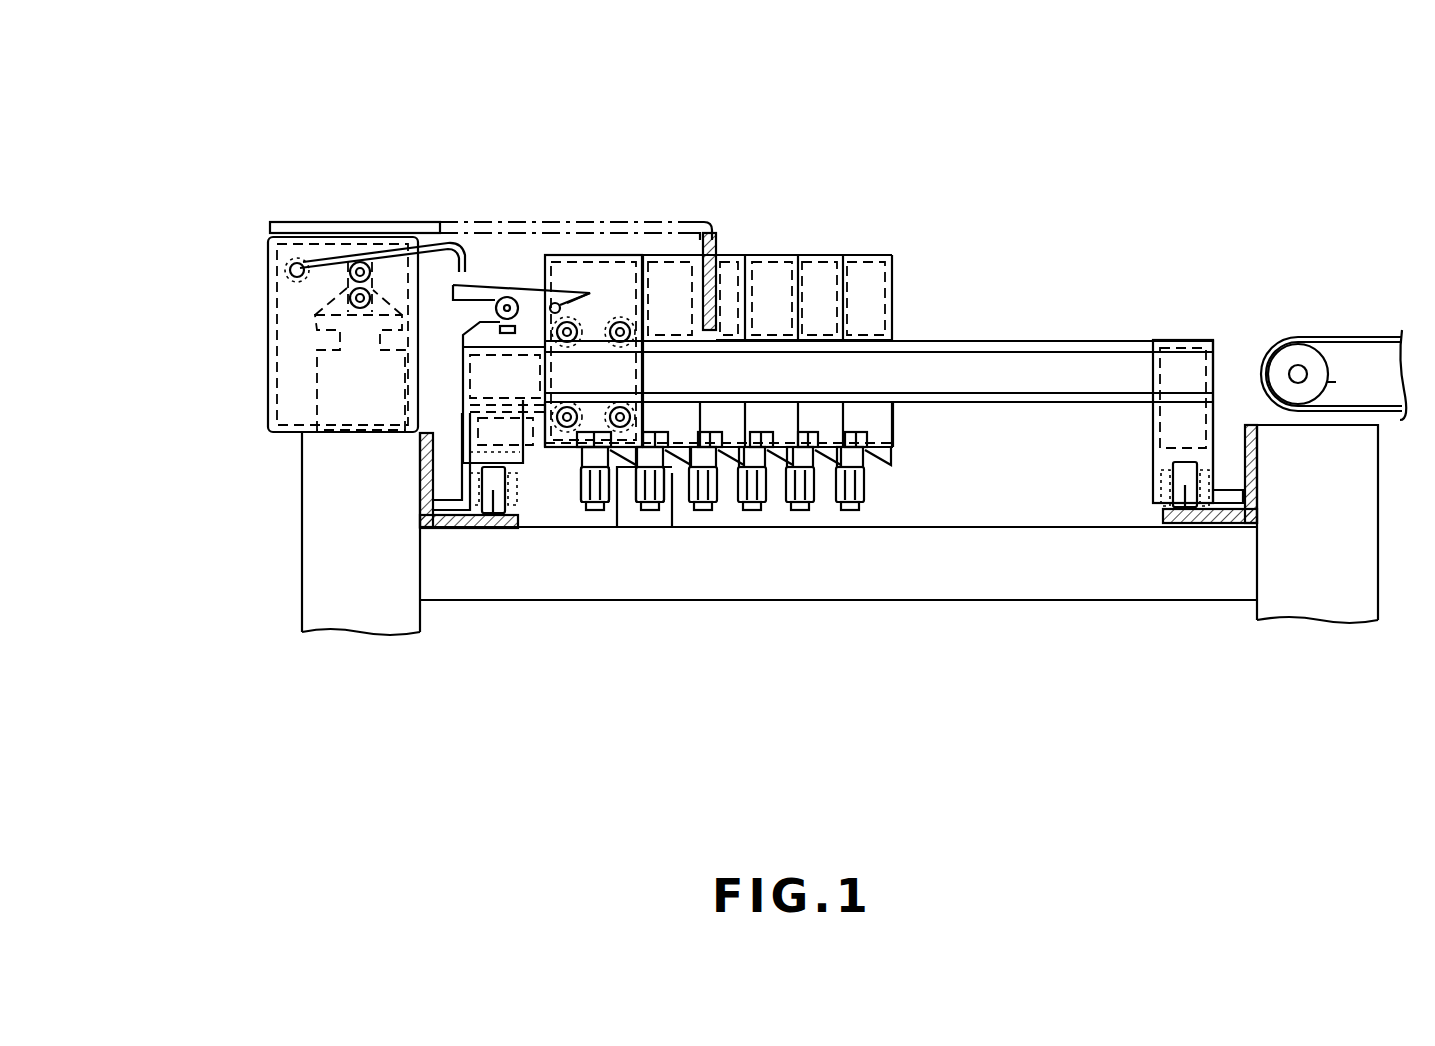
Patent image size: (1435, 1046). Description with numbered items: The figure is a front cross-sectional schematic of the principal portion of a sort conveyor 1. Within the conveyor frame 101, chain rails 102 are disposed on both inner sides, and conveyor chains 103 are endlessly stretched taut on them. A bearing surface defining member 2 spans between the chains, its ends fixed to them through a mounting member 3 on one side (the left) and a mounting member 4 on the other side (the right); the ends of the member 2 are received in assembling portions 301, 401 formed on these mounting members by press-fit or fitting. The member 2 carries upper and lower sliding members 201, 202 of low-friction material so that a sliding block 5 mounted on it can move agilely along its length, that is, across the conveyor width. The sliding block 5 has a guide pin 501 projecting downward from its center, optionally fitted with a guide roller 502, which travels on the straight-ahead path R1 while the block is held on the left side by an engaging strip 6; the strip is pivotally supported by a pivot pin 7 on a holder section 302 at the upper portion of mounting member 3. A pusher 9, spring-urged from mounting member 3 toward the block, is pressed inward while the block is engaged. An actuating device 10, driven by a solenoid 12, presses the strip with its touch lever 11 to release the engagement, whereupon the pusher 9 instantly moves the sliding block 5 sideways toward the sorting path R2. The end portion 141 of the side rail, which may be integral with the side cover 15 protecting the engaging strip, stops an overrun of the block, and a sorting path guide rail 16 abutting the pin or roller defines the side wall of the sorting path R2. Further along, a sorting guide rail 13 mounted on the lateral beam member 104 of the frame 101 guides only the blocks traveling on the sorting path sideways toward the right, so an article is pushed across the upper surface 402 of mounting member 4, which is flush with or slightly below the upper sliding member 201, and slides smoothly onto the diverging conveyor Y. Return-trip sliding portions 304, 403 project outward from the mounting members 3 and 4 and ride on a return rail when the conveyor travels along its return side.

The conveyor 1 is at (800, 604).
The bearing surface defining member 2 is at (1078, 345).
The upper sliding member 201 is at (1005, 341).
The lower sliding member 202 is at (1048, 403).
The mounting member 3 is at (465, 405).
The assembling portion 301 is at (478, 373).
The slider arm 302 is at (473, 327).
The return-trip sliding portion 304 is at (415, 493).
The mounting member 4 is at (1218, 408).
The assembling portion 401 is at (1168, 368).
The upper surface 402 is at (1215, 345).
The return-trip sliding portion 403 is at (1257, 473).
The sliding block 5 is at (612, 255).
The guide pin 501 is at (607, 513).
The guide roller 502 is at (575, 490).
The engaging strip 6 is at (473, 322).
The pivot pin 7 is at (512, 300).
The pusher 9 is at (547, 455).
The actuating device 10 is at (302, 242).
The touch lever 11 is at (440, 233).
The solenoid 12 is at (330, 383).
The sorting guide rail 13 is at (900, 490).
The side cover 15 is at (675, 222).
The end portion 141 is at (718, 232).
The sorting path guide rail 16 is at (680, 505).
The frame 101 is at (317, 522).
The chain rail 102 is at (455, 533).
The conveyor chain 103 is at (493, 513).
The lateral beam member 104 is at (870, 575).
The straight-ahead path R1 is at (595, 513).
The sorting path R2 is at (650, 513).
The diverging conveyor Y is at (1355, 337).